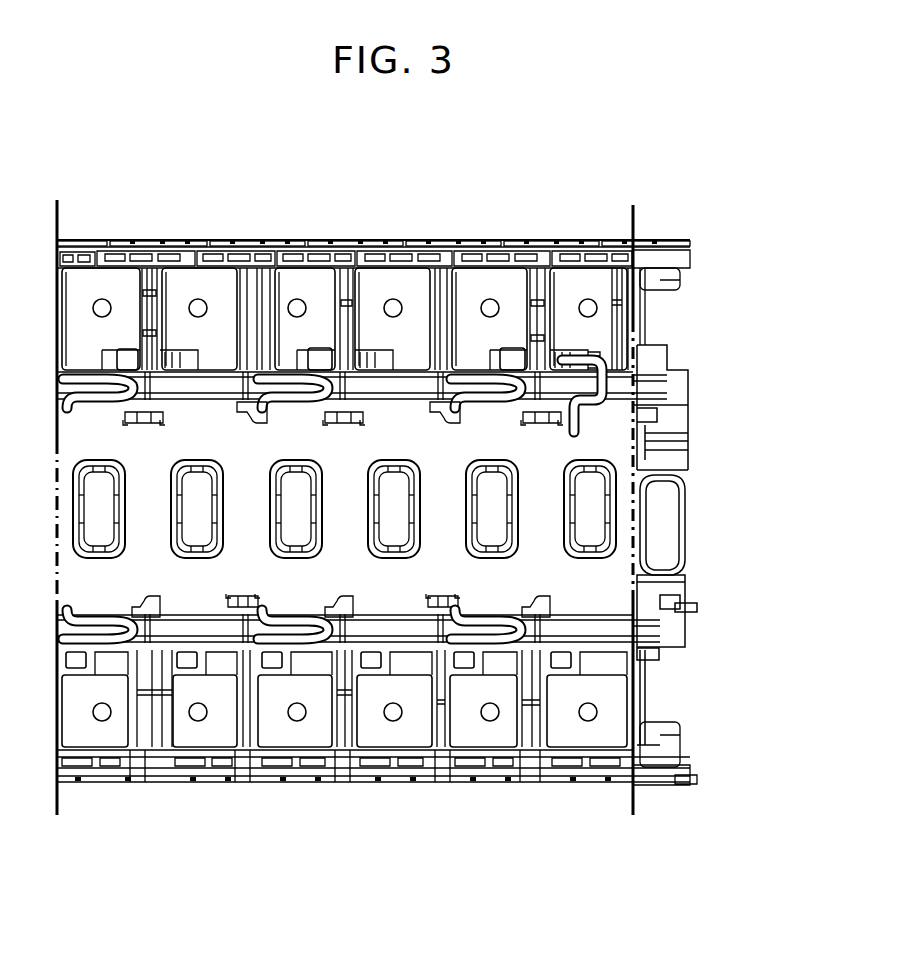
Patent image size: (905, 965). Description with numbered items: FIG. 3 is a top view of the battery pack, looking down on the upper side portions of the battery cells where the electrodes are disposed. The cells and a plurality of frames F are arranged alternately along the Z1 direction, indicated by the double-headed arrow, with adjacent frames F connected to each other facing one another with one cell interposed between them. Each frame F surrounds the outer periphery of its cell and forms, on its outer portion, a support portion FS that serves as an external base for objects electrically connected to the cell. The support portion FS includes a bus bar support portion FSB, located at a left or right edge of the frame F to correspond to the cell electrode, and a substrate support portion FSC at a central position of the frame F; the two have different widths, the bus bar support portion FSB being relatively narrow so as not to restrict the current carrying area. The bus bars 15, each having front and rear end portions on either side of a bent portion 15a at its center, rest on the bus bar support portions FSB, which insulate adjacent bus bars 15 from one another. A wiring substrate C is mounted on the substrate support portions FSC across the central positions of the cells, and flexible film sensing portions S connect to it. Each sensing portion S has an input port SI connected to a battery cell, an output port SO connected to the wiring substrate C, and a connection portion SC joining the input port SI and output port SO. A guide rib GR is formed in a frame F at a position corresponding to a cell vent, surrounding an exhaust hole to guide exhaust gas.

The guide rib GR is at (291, 463).
The bus bar 15 is at (580, 270).
The bent portion 15a is at (618, 270).
The bus bar support portion FSB is at (645, 326).
The support portion FS is at (719, 517).
The substrate support portion FSC is at (680, 446).
The wiring substrate C is at (620, 510).
The sensing portion S is at (533, 587).
The output port SO is at (620, 598).
The frame F is at (228, 765).
The connection portion SC is at (455, 632).
The input port SI is at (465, 669).
The direction Z1 is at (412, 916).